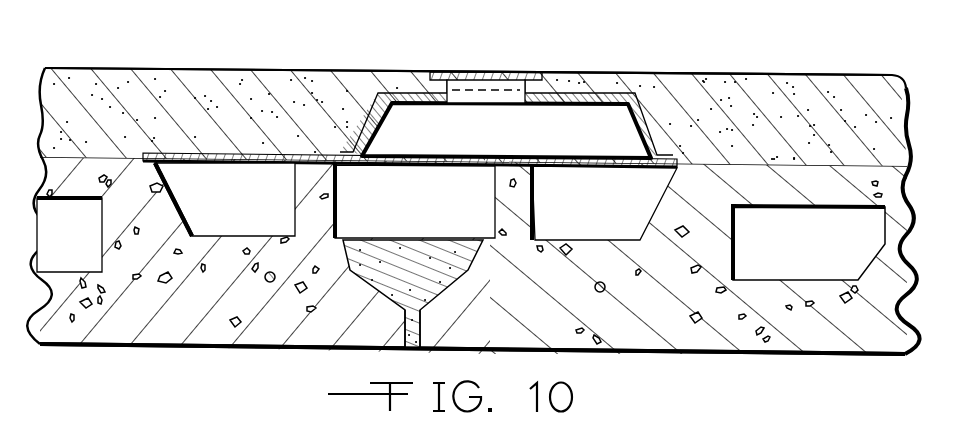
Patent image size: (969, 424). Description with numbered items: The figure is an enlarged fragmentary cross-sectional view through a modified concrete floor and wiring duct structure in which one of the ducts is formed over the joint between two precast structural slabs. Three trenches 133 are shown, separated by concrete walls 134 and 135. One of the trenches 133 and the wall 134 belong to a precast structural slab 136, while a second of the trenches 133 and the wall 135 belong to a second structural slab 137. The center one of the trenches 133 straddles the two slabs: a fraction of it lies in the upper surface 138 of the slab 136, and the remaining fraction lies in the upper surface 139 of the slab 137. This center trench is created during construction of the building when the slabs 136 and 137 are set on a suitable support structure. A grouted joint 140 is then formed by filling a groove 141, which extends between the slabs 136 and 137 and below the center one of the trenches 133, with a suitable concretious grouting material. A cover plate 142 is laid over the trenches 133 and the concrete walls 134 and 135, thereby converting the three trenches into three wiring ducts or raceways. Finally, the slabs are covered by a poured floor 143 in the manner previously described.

The trenches 133 is at (252, 191).
The concrete wall 134 is at (293, 207).
The concrete wall 135 is at (541, 213).
The precast structural slab 136 is at (193, 348).
The second structural slab 137 is at (727, 357).
The upper surface 138 is at (107, 155).
The upper surface 139 is at (707, 165).
The grouted joint 140 is at (390, 302).
The groove 141 is at (446, 288).
The cover plate 142 is at (517, 156).
The poured floor 143 is at (661, 73).